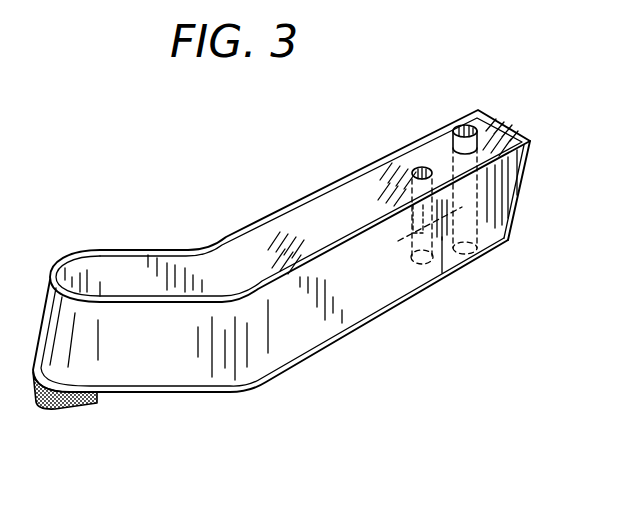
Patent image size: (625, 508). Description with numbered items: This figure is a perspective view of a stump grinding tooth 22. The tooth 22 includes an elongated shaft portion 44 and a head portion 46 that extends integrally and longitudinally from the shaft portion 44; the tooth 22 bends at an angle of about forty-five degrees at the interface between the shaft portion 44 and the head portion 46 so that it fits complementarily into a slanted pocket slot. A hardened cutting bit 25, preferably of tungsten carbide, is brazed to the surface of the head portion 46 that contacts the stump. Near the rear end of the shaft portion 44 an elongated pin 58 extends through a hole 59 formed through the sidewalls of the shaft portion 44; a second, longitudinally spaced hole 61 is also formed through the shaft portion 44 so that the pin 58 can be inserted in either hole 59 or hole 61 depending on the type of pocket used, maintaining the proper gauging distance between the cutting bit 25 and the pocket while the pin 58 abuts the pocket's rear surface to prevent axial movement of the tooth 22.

The tooth 22 is at (300, 269).
The shaft portion 44 is at (340, 203).
The head portion 46 is at (117, 262).
The cutting bit 25 is at (72, 408).
The pin 58 is at (468, 125).
The hole 61 is at (416, 161).
The hole 59 is at (484, 233).